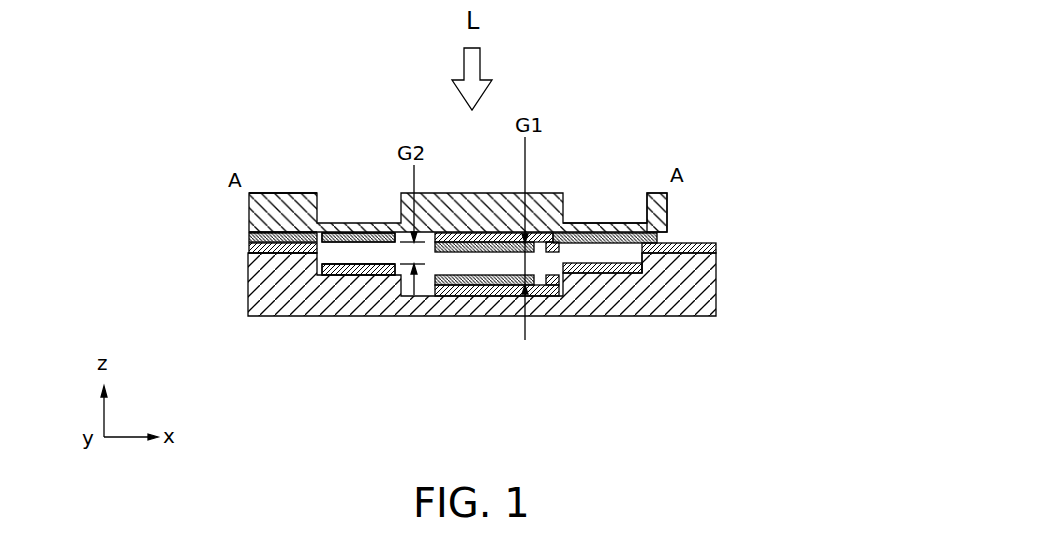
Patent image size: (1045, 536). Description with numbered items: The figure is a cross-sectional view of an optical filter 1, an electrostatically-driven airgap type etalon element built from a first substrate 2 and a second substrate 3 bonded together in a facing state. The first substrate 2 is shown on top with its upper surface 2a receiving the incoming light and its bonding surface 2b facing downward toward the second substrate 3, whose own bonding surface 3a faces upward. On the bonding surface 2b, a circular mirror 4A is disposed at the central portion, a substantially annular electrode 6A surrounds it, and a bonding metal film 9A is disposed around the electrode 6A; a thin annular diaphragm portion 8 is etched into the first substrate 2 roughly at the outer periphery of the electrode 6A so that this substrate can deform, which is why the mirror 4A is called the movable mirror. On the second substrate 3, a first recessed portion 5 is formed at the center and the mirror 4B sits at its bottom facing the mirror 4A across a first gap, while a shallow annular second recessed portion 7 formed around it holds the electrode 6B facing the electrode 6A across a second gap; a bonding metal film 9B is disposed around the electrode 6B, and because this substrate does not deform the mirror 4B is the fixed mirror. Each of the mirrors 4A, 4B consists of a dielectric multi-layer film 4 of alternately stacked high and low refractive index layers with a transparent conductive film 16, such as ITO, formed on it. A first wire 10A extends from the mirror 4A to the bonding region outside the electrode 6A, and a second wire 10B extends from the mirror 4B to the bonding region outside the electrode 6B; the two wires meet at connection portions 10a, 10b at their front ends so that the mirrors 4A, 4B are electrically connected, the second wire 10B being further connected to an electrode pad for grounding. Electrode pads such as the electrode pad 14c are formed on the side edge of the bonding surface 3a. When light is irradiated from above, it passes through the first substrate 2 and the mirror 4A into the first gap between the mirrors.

The optical filter 1 is at (705, 66).
The first substrate 2 is at (668, 195).
The upper surface of lid 2a is at (259, 193).
The bonding surface 2b is at (249, 237).
The second substrate 3 is at (717, 287).
The bonding surface 3a is at (249, 247).
The dielectric multi-layer film 4 is at (464, 245).
The mirror (first mirror) 4A is at (445, 216).
The mirror (second mirror) 4B is at (439, 306).
The first recessed portion 5 is at (405, 289).
The electrode 6A is at (352, 238).
The electrode 6B is at (360, 270).
The second recessed portion 7 is at (327, 270).
The diaphragm portion 8 is at (572, 226).
The bonding metal film 9A is at (282, 240).
The bonding metal film 9B is at (272, 250).
The first wire 10A is at (604, 238).
The second wire 10B is at (594, 273).
The connection portion 10a is at (646, 196).
The connection portion 10b is at (648, 256).
The electrode pad 14c is at (717, 247).
The conductive film 16 is at (497, 238).